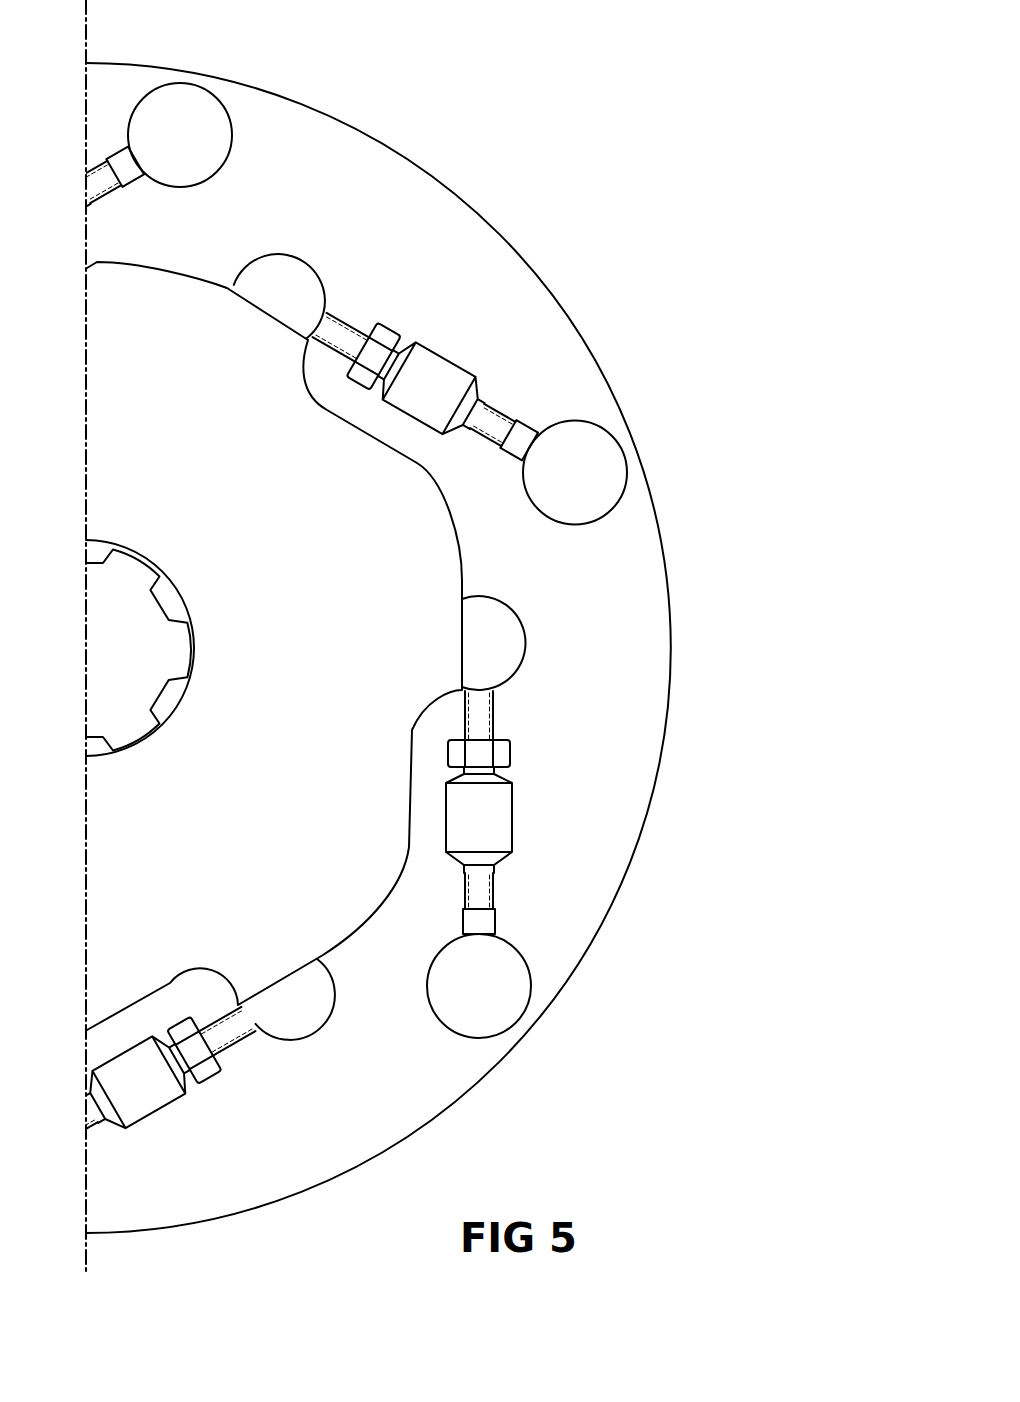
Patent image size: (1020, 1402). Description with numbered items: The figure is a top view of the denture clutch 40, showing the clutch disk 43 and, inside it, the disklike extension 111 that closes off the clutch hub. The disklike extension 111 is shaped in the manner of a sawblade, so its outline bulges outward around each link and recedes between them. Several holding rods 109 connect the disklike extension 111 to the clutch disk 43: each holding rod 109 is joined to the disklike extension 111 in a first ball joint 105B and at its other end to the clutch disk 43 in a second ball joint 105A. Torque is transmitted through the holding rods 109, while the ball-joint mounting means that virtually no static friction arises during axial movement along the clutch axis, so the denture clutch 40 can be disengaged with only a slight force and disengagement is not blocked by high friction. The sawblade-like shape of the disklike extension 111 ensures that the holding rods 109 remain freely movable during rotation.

The denture clutch 40 is at (607, 232).
The clutch disk 43 is at (557, 880).
The second ball joint 105A is at (187, 106).
The first ball joint 105B is at (294, 285).
The holding rod 109 is at (430, 371).
The disklike extension 111 is at (343, 853).